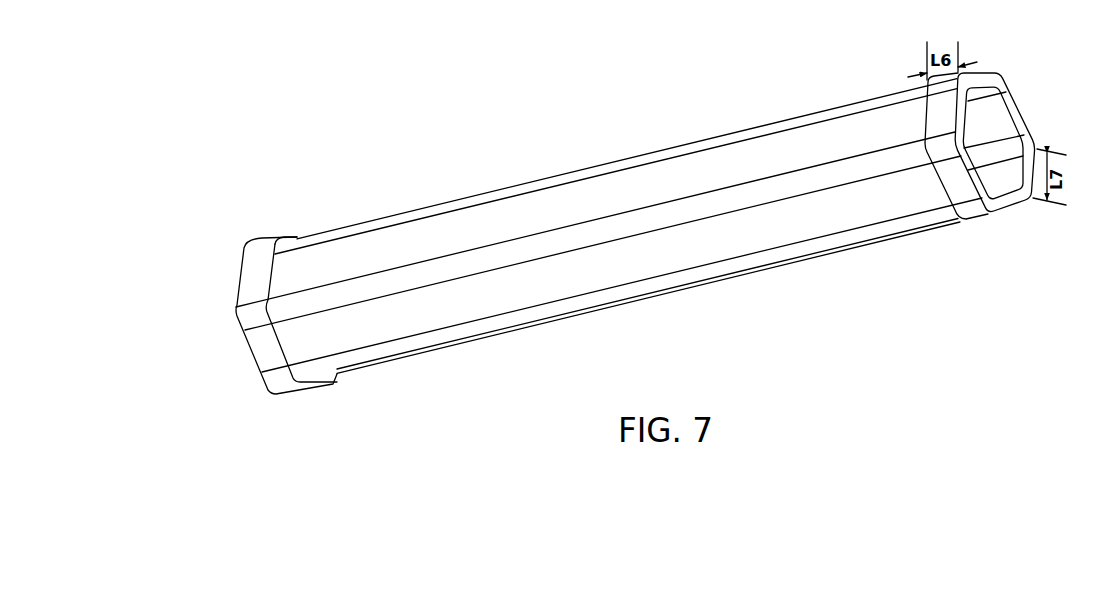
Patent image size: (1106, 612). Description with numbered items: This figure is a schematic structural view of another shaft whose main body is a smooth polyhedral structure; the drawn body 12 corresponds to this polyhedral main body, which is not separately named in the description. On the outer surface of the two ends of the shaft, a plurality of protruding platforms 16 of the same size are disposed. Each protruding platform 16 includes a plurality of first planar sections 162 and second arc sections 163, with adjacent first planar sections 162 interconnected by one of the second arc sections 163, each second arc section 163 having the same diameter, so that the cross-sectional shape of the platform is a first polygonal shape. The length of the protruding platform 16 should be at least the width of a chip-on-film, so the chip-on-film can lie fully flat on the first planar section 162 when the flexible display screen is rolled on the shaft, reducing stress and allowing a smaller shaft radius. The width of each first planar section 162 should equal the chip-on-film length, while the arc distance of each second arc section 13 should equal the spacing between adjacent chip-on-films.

The tube body 12 is at (609, 236).
The second arc section 13 is at (658, 218).
The protruding platform 16 is at (999, 169).
The first planar section 162 is at (962, 183).
The second arc section 163 is at (980, 207).